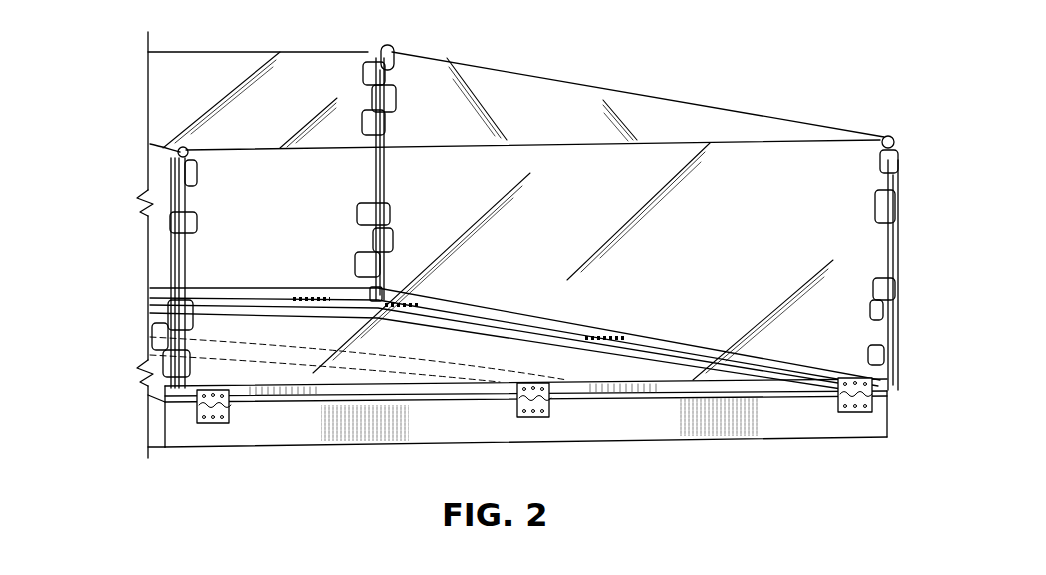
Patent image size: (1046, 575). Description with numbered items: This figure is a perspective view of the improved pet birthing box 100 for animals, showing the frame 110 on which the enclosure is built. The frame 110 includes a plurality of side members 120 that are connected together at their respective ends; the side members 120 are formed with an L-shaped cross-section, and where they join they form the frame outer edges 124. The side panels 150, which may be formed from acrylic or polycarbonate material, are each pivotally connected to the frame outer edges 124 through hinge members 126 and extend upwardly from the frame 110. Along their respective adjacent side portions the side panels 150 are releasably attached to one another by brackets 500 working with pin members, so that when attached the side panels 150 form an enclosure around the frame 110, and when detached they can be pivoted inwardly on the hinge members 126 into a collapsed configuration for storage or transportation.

The improved pet birthing box 100 is at (810, 64).
The frame 110 is at (575, 337).
The side members 120 is at (645, 422).
The frame outer edges 124 is at (712, 350).
The hinge members 126 is at (210, 420).
The side panels 150 is at (168, 97).
The brackets 500 is at (377, 62).